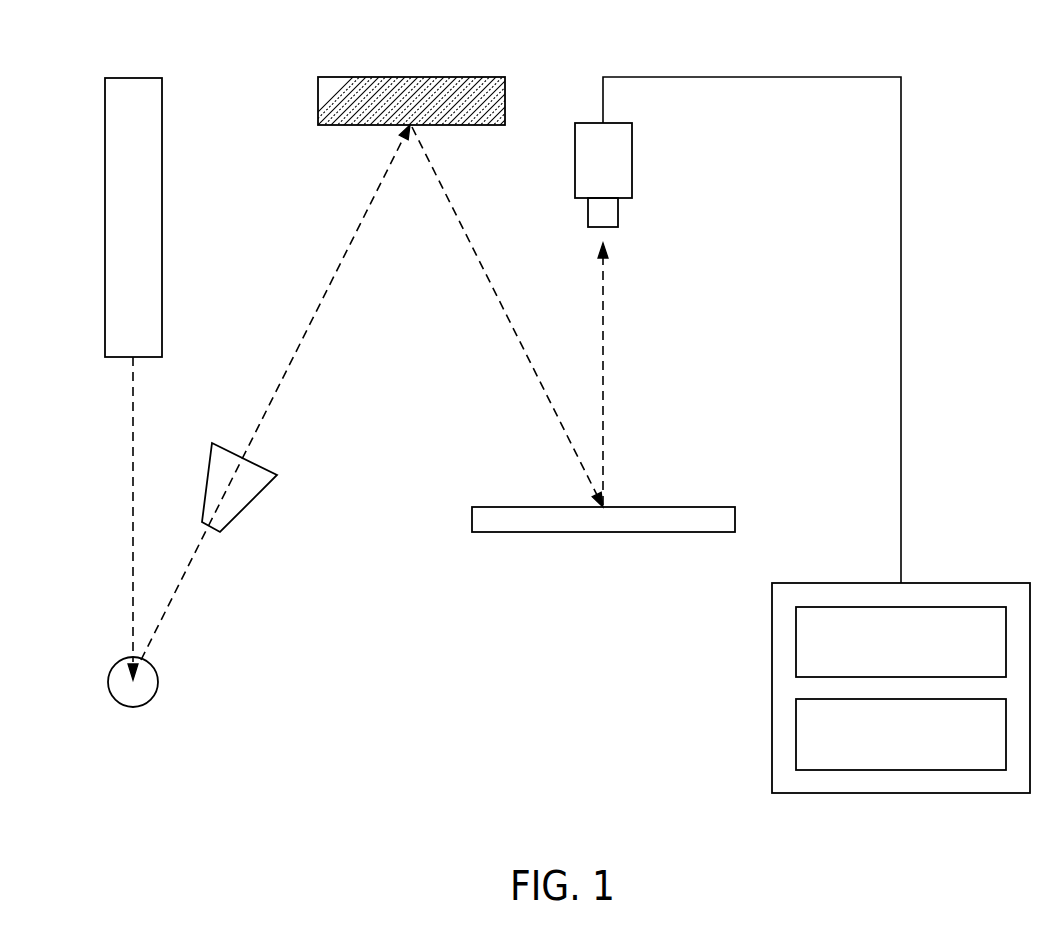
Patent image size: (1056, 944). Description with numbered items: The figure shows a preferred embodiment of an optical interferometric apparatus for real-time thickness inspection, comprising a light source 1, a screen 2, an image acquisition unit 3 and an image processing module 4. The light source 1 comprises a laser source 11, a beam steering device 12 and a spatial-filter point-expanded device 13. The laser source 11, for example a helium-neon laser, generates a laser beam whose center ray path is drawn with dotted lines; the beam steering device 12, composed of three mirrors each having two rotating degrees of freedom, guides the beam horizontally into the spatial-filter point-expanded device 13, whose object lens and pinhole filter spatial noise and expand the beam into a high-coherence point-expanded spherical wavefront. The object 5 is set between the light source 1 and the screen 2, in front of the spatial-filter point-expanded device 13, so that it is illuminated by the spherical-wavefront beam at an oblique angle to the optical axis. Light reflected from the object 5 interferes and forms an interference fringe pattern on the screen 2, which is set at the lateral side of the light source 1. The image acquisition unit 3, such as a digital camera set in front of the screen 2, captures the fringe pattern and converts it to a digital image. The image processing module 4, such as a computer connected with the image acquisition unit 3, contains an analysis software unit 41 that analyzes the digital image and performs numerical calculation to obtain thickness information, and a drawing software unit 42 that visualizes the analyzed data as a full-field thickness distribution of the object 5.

The light source 1 is at (244, 192).
The laser source 11 is at (162, 217).
The beam steering device 12 is at (138, 660).
The spatial-filter point-expanded device 13 is at (238, 442).
The screen 2 is at (663, 507).
The image acquisition unit 3 is at (632, 160).
The image processing module 4 is at (952, 583).
The analysis software unit 41 is at (796, 643).
The drawing software unit 42 is at (796, 737).
The object 5 is at (412, 77).